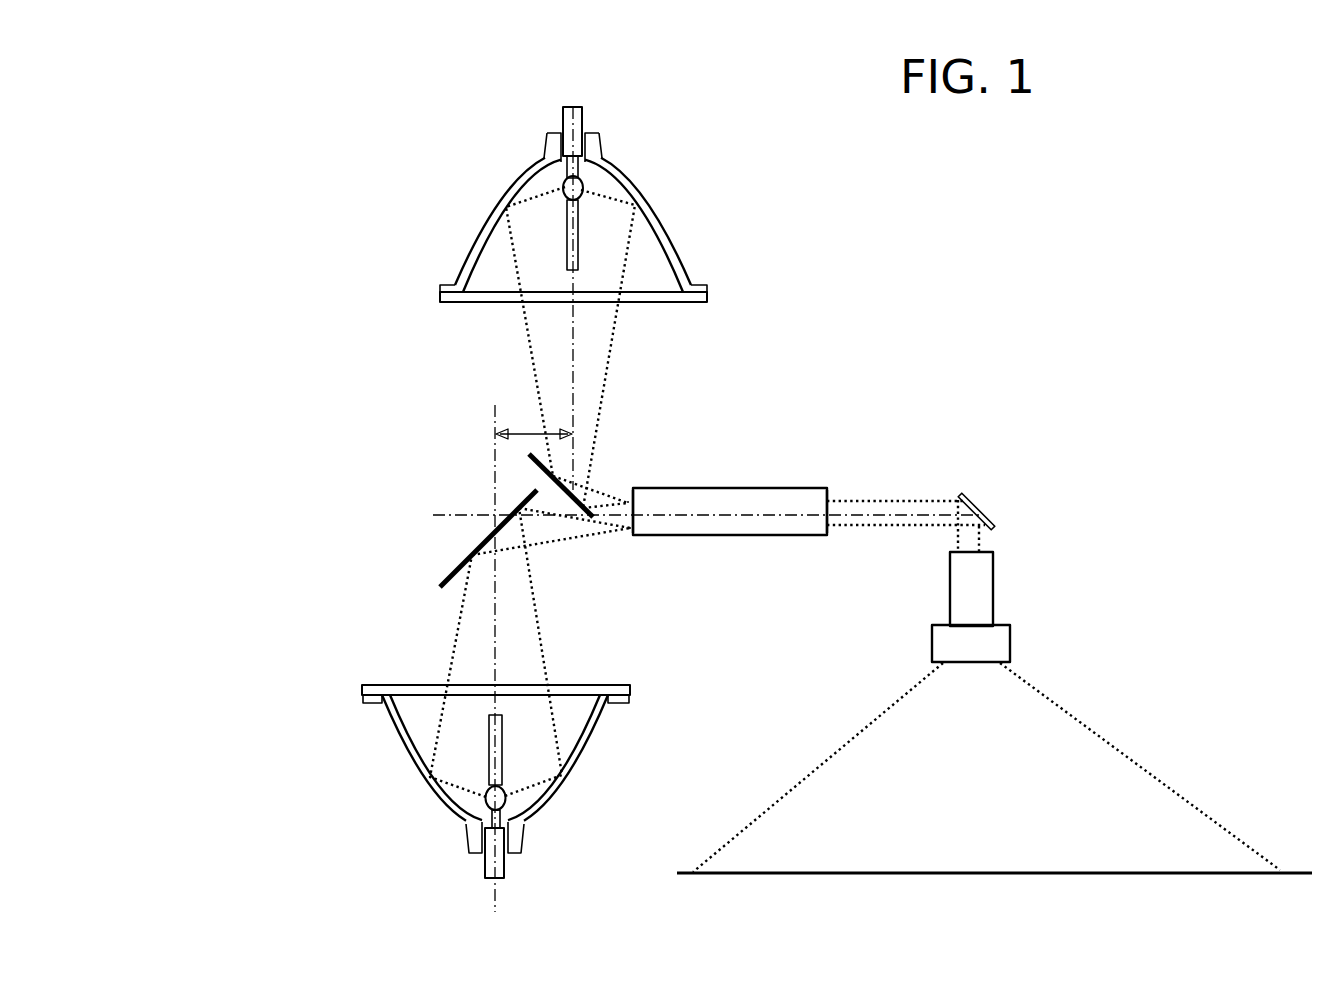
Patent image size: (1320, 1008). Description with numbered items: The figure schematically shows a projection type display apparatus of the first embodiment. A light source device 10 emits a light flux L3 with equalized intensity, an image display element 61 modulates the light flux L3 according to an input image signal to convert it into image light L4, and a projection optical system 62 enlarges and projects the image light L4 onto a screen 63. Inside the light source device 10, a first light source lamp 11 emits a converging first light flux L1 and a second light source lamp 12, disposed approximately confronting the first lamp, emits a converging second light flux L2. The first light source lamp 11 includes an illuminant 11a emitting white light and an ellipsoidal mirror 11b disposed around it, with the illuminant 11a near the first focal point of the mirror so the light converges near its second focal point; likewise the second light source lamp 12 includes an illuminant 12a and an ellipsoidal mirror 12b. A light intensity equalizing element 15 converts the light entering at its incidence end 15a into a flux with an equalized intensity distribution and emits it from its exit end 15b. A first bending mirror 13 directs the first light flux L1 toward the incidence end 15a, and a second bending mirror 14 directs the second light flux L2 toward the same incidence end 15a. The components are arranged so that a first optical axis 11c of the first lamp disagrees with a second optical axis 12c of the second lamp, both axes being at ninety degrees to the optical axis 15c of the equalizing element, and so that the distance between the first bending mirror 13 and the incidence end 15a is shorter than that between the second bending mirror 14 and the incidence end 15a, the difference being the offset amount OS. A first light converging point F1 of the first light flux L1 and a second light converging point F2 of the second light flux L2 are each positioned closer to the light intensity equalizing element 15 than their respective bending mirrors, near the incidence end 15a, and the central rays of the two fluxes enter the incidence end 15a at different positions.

The light source device 10 is at (803, 105).
The first light source lamp 11 is at (365, 97).
The illuminant 11a is at (563, 188).
The ellipsoidal mirror 11b is at (482, 228).
The first optical axis 11c is at (575, 382).
The second light source lamp 12 is at (273, 702).
The illuminant 12a is at (485, 798).
The ellipsoidal mirror 12b is at (397, 730).
The second optical axis 12c is at (495, 637).
The first bending mirror 13 is at (548, 481).
The second bending mirror 14 is at (480, 547).
The light intensity equalizing element 15 is at (767, 498).
The incidence end 15a is at (631, 537).
The exit end 15b is at (827, 524).
The optical axis 15c is at (883, 508).
The image display element 61 is at (982, 520).
The projection optical system 62 is at (993, 620).
The screen 63 is at (1287, 872).
The offset amount OS is at (526, 432).
The first light flux L1 is at (611, 347).
The second light flux L2 is at (544, 655).
The light flux L3 is at (897, 528).
The image light L4 is at (980, 547).
The first light converging point F1 is at (628, 500).
The second light converging point F2 is at (628, 528).